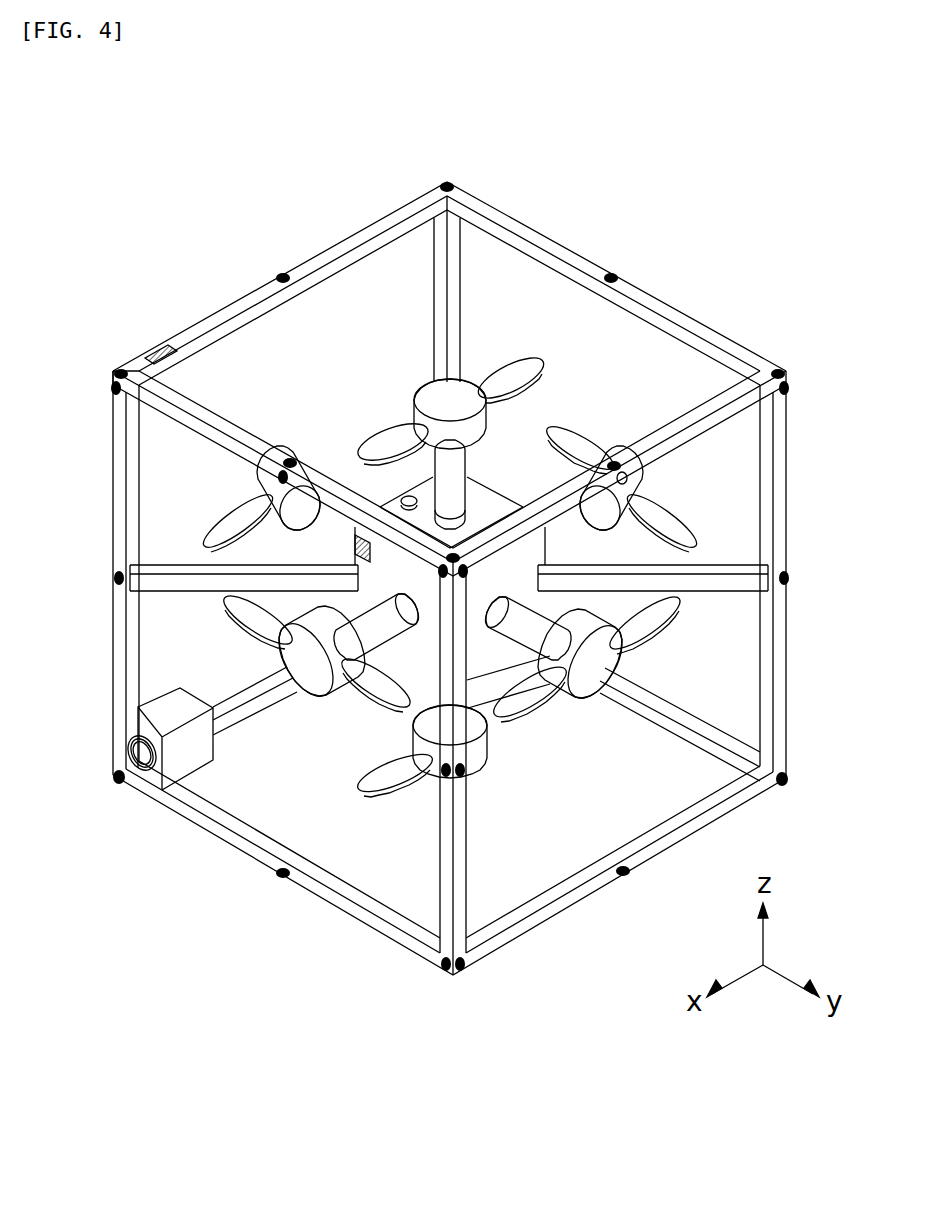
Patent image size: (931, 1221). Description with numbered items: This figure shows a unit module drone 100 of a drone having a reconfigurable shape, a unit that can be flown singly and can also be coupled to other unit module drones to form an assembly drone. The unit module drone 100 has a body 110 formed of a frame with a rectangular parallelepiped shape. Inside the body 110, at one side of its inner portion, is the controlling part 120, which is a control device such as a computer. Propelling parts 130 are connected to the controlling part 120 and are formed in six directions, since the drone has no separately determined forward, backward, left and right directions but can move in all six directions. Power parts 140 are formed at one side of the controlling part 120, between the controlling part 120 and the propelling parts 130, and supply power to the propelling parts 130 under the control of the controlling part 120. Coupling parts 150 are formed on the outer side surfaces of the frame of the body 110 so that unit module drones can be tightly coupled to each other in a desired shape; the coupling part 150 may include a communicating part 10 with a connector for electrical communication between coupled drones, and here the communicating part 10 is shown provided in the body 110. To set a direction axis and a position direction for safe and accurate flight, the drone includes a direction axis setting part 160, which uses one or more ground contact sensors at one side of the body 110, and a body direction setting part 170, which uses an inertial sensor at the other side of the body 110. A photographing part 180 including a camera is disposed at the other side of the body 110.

The unit module drone 100 is at (566, 192).
The body 110 is at (393, 208).
The communicating part 10 is at (410, 495).
The controlling part 120 is at (467, 513).
The propelling part 130 is at (607, 658).
The power part 140 is at (540, 583).
The coupling part 150 is at (120, 368).
The direction axis setting part 160 is at (152, 342).
The body direction setting part 170 is at (350, 535).
The photographing part 180 is at (170, 766).